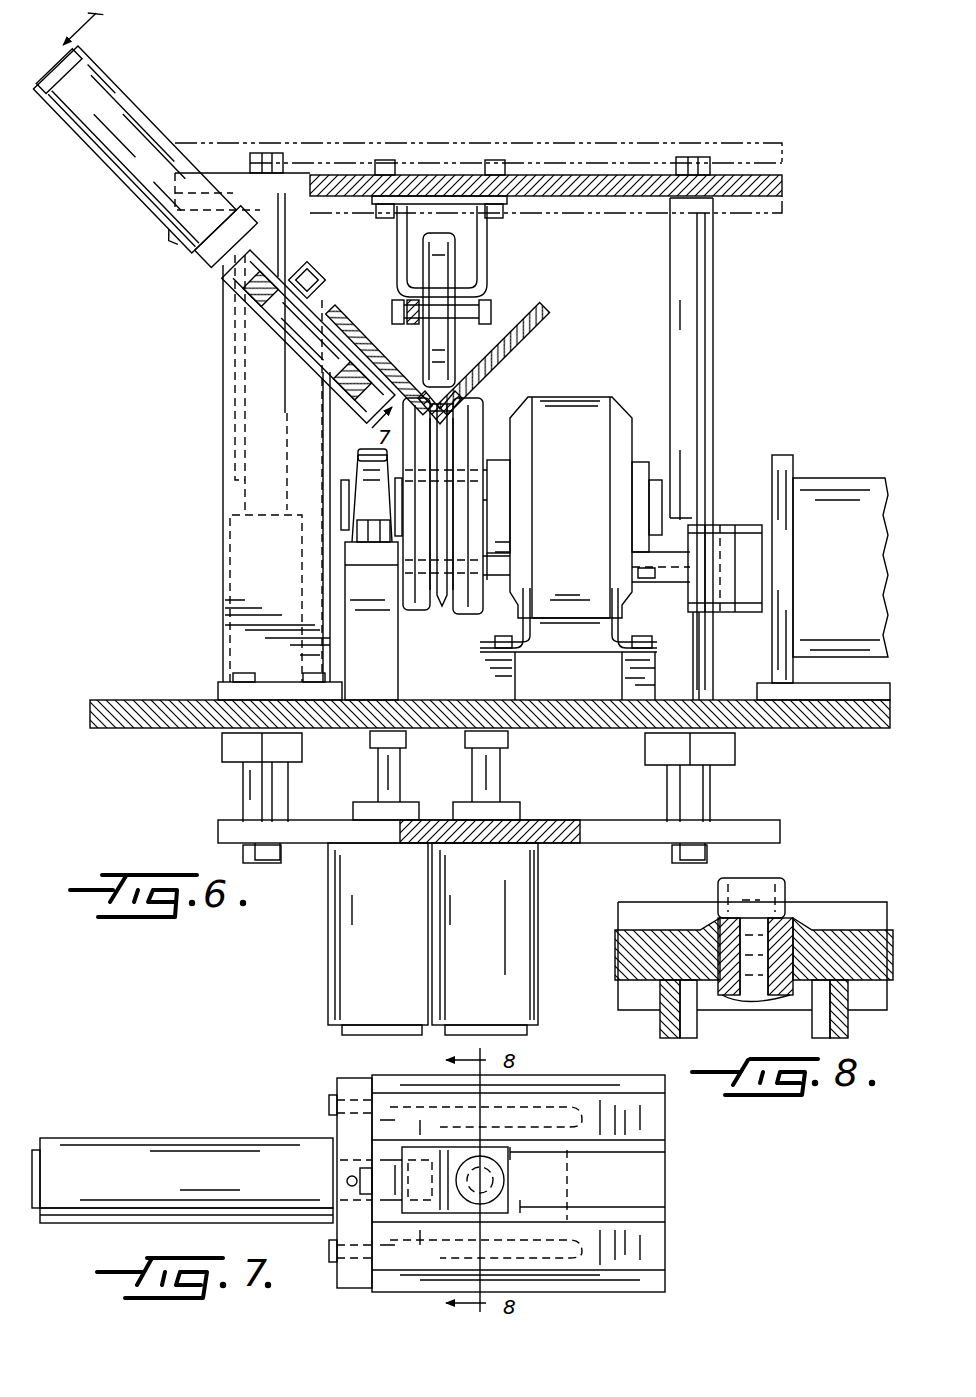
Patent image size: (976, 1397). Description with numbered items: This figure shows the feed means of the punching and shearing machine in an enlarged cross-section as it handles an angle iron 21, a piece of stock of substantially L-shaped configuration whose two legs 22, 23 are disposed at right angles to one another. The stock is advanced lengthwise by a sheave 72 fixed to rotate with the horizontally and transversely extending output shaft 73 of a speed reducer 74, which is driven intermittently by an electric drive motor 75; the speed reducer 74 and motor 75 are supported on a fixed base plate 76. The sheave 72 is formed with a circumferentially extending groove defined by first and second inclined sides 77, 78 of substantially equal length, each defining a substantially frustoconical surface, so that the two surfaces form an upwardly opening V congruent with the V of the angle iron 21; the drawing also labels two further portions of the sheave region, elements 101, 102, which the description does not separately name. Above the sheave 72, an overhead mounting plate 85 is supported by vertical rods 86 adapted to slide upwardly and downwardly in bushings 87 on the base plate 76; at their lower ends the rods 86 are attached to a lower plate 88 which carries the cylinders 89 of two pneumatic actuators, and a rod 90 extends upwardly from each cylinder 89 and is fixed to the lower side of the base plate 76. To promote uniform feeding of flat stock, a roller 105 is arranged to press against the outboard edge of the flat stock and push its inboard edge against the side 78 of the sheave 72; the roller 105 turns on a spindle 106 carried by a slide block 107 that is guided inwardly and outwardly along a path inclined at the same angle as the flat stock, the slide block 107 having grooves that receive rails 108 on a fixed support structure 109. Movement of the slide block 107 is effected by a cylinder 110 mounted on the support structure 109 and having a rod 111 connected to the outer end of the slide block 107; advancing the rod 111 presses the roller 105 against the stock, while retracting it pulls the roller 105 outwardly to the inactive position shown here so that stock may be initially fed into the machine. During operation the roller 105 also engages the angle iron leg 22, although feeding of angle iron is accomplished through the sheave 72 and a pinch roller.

In FIG. 6, the angle iron 21 is at (528, 354).
In FIG. 6, the leg 22 is at (360, 318).
In FIG. 6, the leg 23 is at (526, 310).
In FIG. 6, the sheave 72 is at (434, 609).
In FIG. 6, the output shaft 73 is at (492, 496).
In FIG. 6, the speed reducer 74 is at (580, 402).
In FIG. 6, the electric drive motor 75 is at (842, 480).
In FIG. 6, the base plate 76 is at (142, 702).
In FIG. 6, the first inclined side 77 is at (410, 578).
In FIG. 6, the second inclined side 78 is at (497, 572).
In FIG. 6, the overhead mounting plate 85 is at (592, 174).
In FIG. 6, the vertical rods 86 is at (222, 464).
In FIG. 6, the bushings 87 is at (240, 584).
In FIG. 6, the lower plate 88 is at (622, 824).
In FIG. 6, the cylinders 89 is at (540, 890).
In FIG. 6, the rod 90 is at (386, 770).
In FIG. 6, the sheave flange 101 is at (493, 407).
In FIG. 6, the sheave flange 102 is at (462, 463).
In FIG. 6, the roller 105 is at (316, 275).
In FIG. 8, the roller 105 is at (775, 878).
In FIG. 7, the roller 105 is at (506, 1178).
In FIG. 8, the spindle 106 is at (790, 912).
In FIG. 8, the slide block 107 is at (736, 1000).
In FIG. 7, the slide block 107 is at (420, 1150).
In FIG. 8, the rails 108 is at (721, 930).
In FIG. 7, the rails 108 is at (638, 1210).
In FIG. 6, the support structure 109 is at (304, 343).
In FIG. 8, the support structure 109 is at (622, 936).
In FIG. 7, the support structure 109 is at (668, 1137).
In FIG. 6, the cylinder 110 is at (138, 190).
In FIG. 7, the cylinder 110 is at (142, 1156).
In FIG. 7, the rod 111 is at (356, 1162).